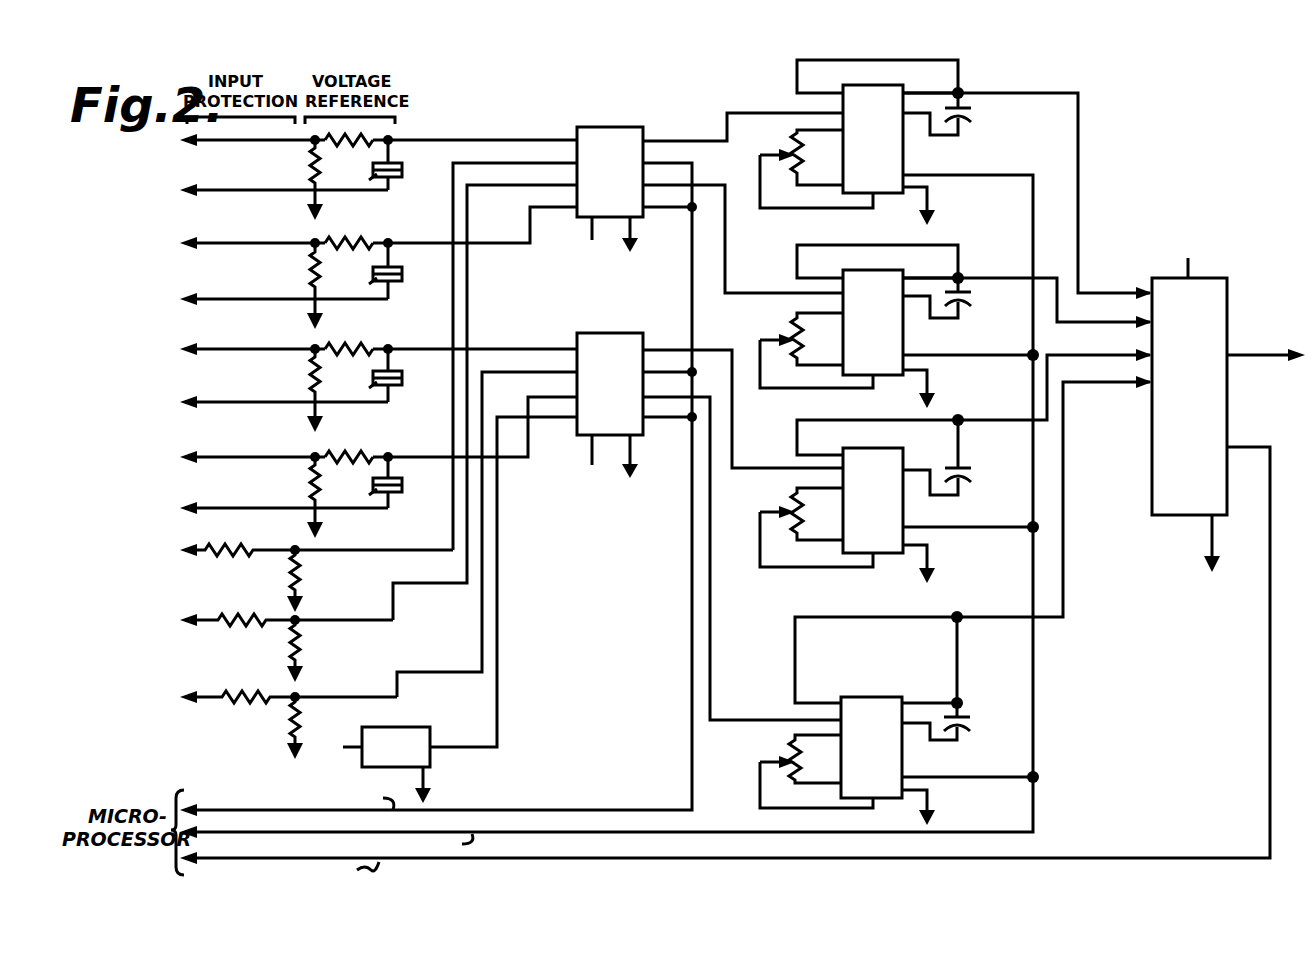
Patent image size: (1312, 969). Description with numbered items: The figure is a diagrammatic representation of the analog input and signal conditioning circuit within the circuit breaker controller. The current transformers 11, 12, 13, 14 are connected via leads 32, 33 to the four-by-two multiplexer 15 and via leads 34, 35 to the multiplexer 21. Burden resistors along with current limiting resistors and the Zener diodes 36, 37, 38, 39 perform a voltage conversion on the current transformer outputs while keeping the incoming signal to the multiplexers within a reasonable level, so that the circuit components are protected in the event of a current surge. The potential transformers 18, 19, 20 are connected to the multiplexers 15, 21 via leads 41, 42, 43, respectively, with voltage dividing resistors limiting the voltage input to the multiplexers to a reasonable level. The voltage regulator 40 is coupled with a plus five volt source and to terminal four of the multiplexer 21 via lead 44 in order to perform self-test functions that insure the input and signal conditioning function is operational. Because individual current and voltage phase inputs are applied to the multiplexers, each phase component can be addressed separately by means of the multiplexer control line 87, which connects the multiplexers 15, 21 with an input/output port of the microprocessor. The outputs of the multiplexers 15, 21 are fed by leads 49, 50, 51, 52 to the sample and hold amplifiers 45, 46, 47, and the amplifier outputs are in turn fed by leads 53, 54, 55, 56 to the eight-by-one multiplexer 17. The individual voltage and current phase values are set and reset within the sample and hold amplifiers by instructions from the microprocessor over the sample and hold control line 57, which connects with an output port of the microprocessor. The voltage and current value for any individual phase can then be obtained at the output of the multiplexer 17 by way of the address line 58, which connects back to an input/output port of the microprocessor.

The current transformer 11 is at (184, 130).
The current transformer 12 is at (184, 233).
The current transformer 13 is at (184, 339).
The current transformer 14 is at (184, 447).
The 4/2 multiplexer 15 is at (630, 122).
The 8/1 multiplexer 17 is at (1207, 414).
The potential transformer 18 is at (296, 566).
The potential transformer 19 is at (266, 635).
The potential transformer 20 is at (267, 712).
The multiplexer 21 is at (627, 330).
The lead 32 is at (505, 140).
The lead 33 is at (500, 243).
The lead 34 is at (495, 349).
The lead 35 is at (515, 457).
The Zener diode 36 is at (413, 169).
The Zener diode 37 is at (413, 273).
The Zener diode 38 is at (413, 377).
The Zener diode 39 is at (413, 484).
The voltage regulator 40 is at (413, 762).
The lead 41 is at (426, 548).
The lead 42 is at (383, 620).
The lead 43 is at (378, 696).
The lead 44 is at (486, 748).
The sample and hold amplifier 45 is at (893, 339).
The sample and hold amplifier 46 is at (893, 516).
The sample and hold amplifier 47 is at (891, 766).
The lead 49 is at (893, 156).
The lead 50 is at (778, 466).
The lead 51 is at (768, 720).
The lead 52 is at (762, 116).
The lead 53 is at (1040, 103).
The lead 54 is at (1018, 278).
The lead 55 is at (1018, 420).
The lead 56 is at (1018, 620).
The sample and hold control line 57 is at (740, 833).
The address line 58 is at (1268, 702).
The multiplexer control line 87 is at (670, 812).